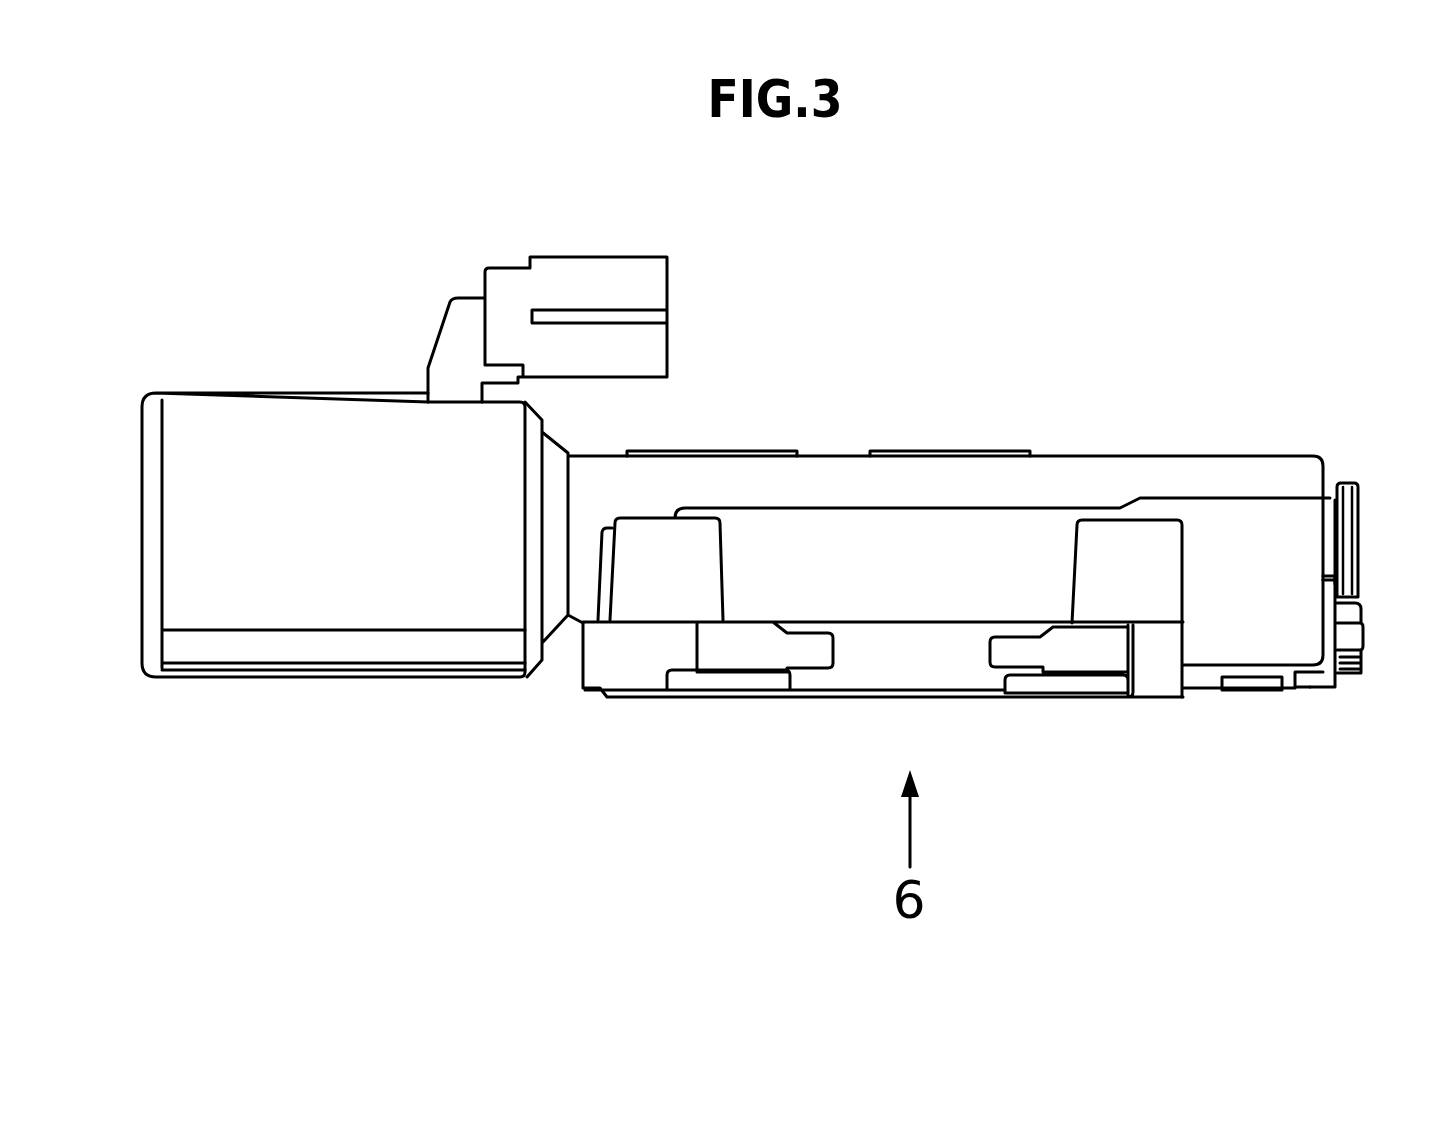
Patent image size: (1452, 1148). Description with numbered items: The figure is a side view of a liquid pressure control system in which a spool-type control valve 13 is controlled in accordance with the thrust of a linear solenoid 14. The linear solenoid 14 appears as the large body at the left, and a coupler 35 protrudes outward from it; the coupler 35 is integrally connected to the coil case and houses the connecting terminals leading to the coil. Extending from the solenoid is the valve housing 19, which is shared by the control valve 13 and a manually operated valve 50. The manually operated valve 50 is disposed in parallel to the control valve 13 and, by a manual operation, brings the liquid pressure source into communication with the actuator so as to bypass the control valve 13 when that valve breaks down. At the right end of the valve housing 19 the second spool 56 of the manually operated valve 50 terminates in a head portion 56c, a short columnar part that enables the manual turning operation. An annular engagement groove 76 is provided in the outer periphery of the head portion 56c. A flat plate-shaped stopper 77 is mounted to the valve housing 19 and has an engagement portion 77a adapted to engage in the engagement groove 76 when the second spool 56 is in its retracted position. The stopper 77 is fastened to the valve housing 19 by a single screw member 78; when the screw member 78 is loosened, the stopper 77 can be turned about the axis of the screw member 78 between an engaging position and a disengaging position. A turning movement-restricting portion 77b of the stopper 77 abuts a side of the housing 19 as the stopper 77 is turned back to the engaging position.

The spool-type control valve 13 is at (1132, 458).
The linear solenoid 14 is at (357, 545).
The valve housing 19 is at (843, 473).
The coupler 35 is at (512, 278).
The manually operated valve 50 is at (895, 509).
The second spool 56 is at (1350, 483).
The head portion 56c is at (1363, 508).
The annular engagement groove 76 is at (1330, 499).
The stopper 77 is at (1330, 643).
The engagement portion 77a is at (1332, 587).
The turning movement-restricting portion 77b is at (1307, 680).
The screw member 78 is at (1360, 615).